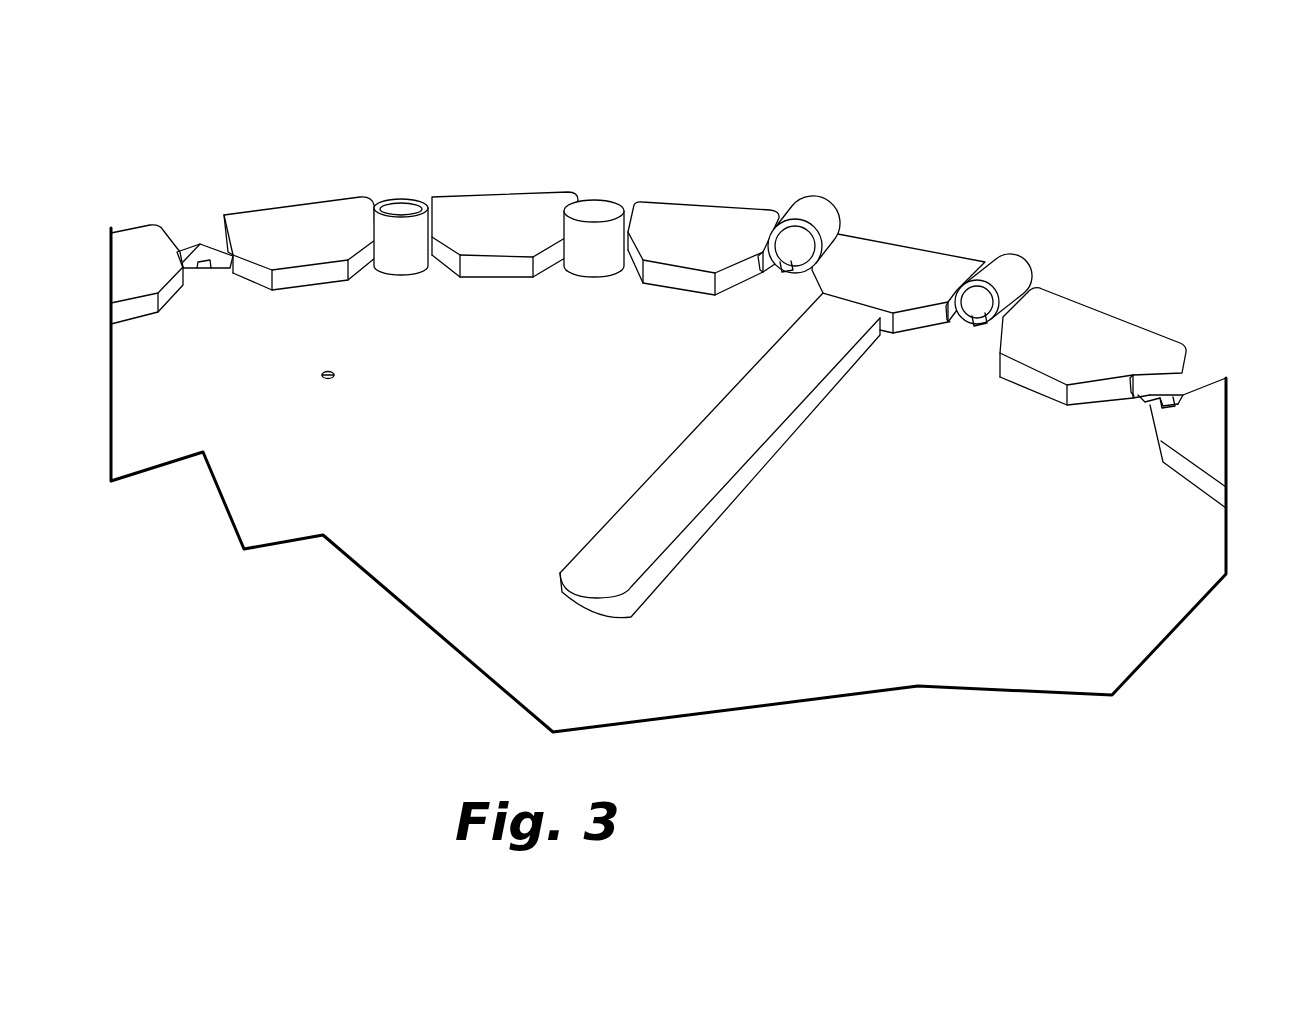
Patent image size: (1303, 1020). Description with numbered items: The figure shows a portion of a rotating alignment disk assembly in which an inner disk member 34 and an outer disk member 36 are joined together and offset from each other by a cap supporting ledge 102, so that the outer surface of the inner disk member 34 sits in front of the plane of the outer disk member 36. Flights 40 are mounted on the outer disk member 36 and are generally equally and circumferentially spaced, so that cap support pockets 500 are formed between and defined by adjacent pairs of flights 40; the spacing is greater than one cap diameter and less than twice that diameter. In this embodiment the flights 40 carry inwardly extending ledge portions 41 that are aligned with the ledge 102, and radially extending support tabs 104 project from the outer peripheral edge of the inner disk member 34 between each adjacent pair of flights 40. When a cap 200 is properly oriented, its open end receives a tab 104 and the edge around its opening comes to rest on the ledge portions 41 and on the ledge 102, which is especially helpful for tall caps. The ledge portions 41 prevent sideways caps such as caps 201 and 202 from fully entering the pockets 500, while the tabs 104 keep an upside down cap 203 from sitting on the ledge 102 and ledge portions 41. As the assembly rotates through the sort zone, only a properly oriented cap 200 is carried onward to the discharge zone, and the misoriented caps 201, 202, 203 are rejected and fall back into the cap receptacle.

The inner disk member 34 is at (668, 480).
The outer disk member 36 is at (185, 258).
The flight 40 is at (312, 238).
The ledge portion 41 is at (228, 252).
The cap supporting ledge 102 is at (185, 275).
The support tab 104 is at (207, 268).
The properly oriented cap 200 is at (1007, 282).
The sideways cap 201 is at (408, 197).
The sideways cap 202 is at (602, 212).
The upside down cap 203 is at (813, 208).
The cap support pocket 500 is at (192, 232).